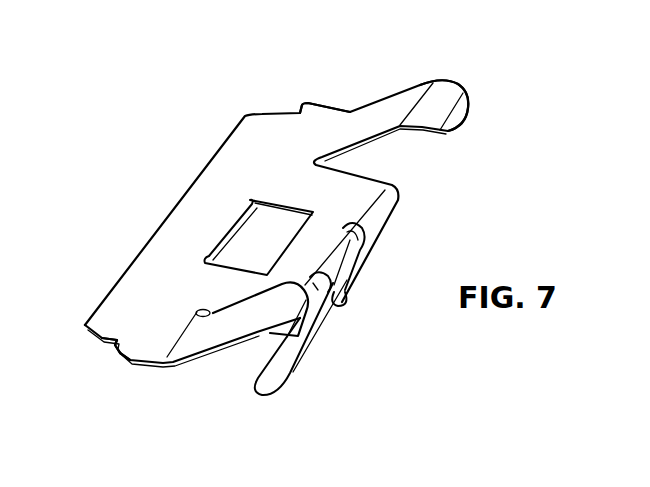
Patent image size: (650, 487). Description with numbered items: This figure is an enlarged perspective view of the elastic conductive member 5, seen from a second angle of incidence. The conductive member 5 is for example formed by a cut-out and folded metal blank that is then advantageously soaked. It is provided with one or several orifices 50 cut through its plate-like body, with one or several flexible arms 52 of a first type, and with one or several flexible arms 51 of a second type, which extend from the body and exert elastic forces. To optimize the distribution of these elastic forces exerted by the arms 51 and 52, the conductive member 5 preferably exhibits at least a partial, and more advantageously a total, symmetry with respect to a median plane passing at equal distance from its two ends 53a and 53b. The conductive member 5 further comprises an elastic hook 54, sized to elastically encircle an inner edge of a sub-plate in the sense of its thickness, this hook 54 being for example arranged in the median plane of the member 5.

The elastic conductive member 5 is at (178, 179).
The orifice 50 is at (261, 230).
The flexible arm of a second type 51 is at (450, 98).
The flexible arm of a first type 52 is at (377, 278).
The end of the conductive member 53a is at (127, 358).
The end of the conductive member 53b is at (322, 102).
The elastic hook 54 is at (343, 308).